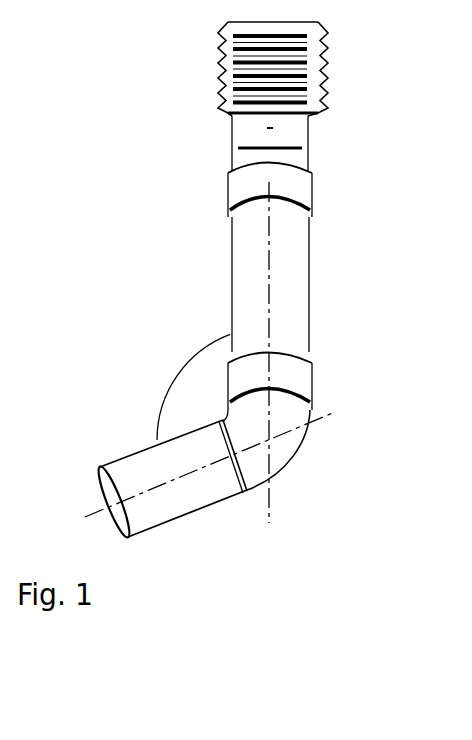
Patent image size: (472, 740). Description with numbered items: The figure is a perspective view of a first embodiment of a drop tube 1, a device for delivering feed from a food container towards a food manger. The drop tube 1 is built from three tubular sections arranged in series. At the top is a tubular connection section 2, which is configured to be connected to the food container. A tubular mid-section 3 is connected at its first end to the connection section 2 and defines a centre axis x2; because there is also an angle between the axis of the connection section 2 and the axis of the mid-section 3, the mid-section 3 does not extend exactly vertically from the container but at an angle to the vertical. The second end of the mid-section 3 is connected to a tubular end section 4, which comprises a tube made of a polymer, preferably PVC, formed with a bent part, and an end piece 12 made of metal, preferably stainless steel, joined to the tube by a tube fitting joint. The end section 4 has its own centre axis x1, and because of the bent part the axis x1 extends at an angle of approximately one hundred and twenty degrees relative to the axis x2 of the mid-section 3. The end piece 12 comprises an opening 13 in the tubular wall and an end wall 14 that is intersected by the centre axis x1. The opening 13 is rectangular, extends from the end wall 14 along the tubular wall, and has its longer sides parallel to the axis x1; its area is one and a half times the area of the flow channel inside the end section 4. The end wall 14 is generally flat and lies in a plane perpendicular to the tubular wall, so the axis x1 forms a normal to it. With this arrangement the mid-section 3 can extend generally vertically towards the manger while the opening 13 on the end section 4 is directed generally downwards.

The drop tube 1 is at (192, 206).
The tubular connection section 2 is at (310, 47).
The tubular mid-section 3 is at (242, 250).
The tubular end section 4 is at (300, 457).
The end piece 12 is at (197, 481).
The opening 13 is at (170, 521).
The end wall 14 is at (113, 493).
The centre axis of the tubular end section x1 is at (305, 424).
The centre axis of the tubular mid-section x2 is at (270, 283).